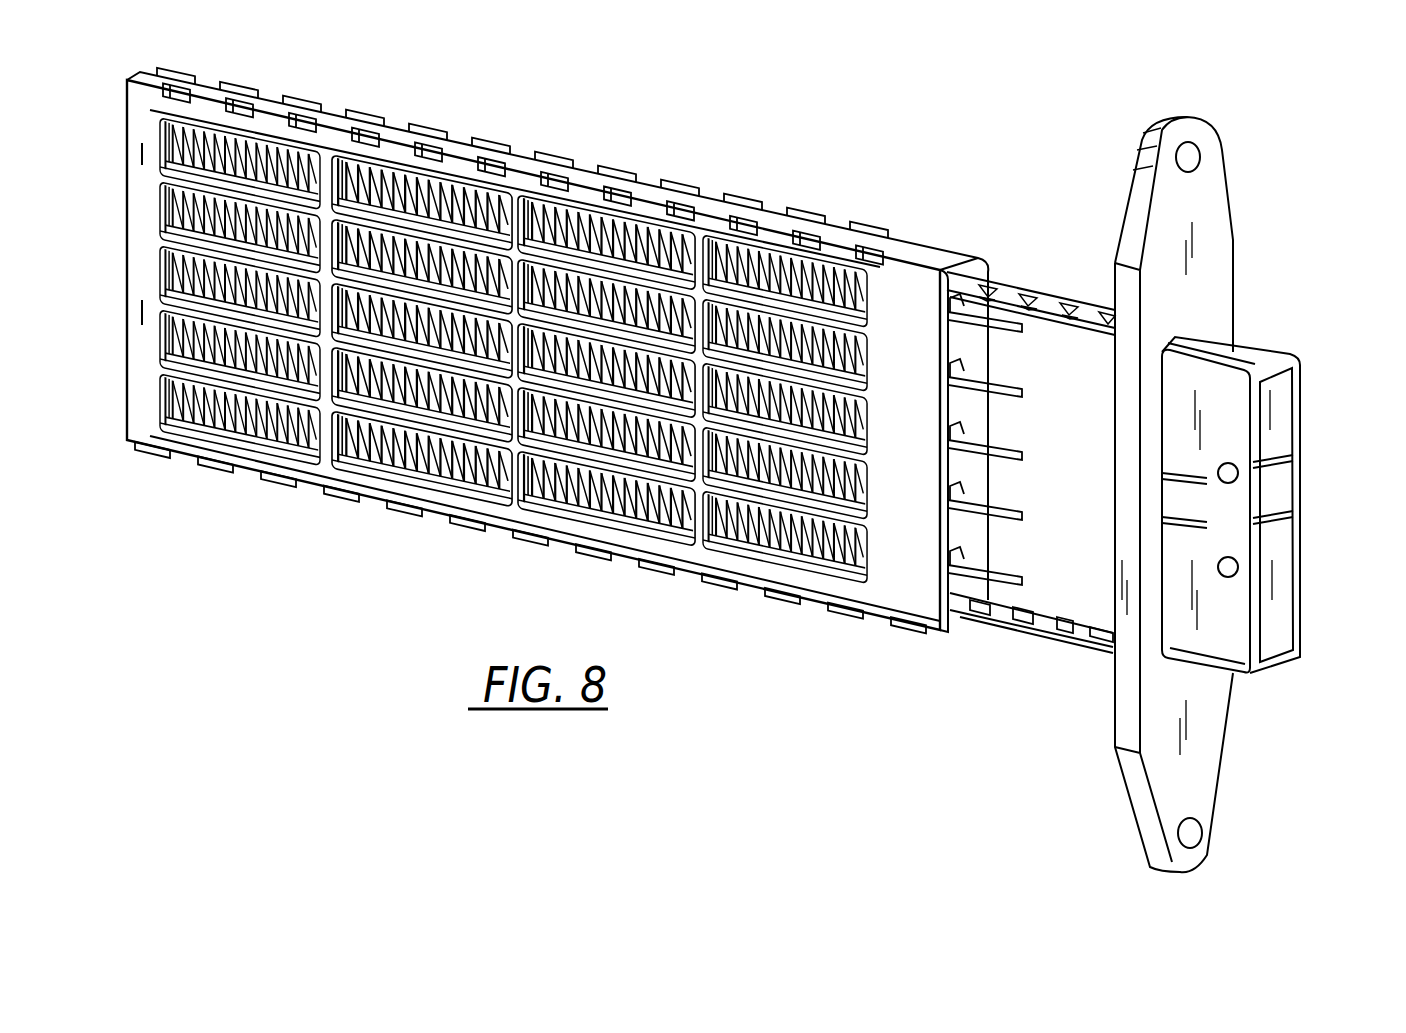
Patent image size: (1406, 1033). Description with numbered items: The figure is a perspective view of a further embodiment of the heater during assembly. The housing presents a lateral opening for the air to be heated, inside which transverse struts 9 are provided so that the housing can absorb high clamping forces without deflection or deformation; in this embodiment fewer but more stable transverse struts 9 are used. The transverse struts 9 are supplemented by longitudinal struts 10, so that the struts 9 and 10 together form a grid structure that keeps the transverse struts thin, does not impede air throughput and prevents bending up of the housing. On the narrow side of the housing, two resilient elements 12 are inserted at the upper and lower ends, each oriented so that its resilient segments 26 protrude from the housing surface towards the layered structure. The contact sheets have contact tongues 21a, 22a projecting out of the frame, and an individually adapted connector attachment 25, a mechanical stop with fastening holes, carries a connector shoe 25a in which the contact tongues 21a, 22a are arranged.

The transverse strut 9 is at (323, 447).
The longitudinal strut 10 is at (497, 438).
The resilient element 12 is at (1083, 257).
The contact tongue 21a is at (1005, 385).
The contact tongue 22a is at (1010, 450).
The connector attachment 25 is at (1222, 243).
The connector shoe 25a is at (1302, 377).
The resilient segment 26 is at (1033, 605).